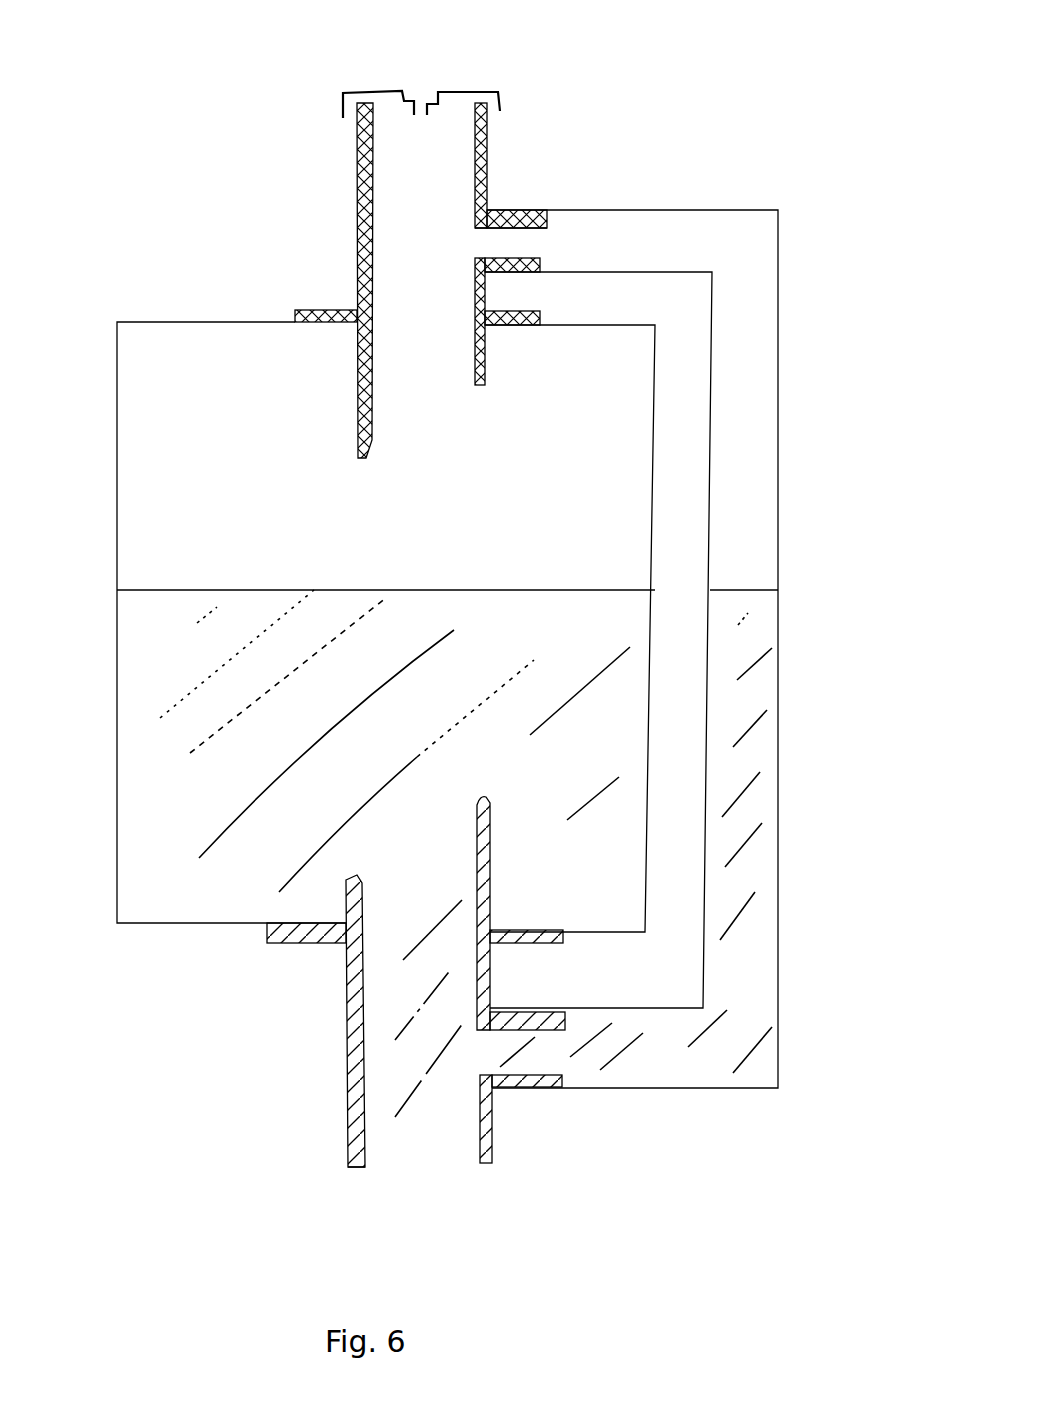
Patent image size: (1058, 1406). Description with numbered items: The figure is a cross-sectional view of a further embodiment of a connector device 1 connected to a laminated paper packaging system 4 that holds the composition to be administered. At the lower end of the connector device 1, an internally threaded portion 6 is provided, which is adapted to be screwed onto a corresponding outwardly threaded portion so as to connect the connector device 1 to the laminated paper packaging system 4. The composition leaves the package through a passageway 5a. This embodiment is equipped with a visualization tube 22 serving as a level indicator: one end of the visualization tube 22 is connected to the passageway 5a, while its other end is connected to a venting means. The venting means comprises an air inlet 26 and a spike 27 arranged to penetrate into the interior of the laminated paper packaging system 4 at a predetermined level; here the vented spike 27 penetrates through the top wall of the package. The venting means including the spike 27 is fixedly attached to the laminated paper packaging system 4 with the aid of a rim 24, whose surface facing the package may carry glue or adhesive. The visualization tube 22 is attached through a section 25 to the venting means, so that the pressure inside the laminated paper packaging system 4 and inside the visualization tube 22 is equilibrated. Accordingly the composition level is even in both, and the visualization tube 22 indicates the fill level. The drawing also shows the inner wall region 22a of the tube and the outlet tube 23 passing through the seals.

The connector device 1 is at (345, 1040).
The laminated paper packaging system 4 is at (116, 500).
The passageway 5a is at (397, 942).
The internally threaded portion 6 is at (337, 952).
The visualization tube 22 is at (775, 417).
The inner chamber wall 22a is at (747, 520).
The outlet tube 23 is at (488, 165).
The rim 24 is at (345, 312).
The section 25 is at (540, 225).
The air inlet 26 is at (410, 88).
The spike 27 is at (357, 375).